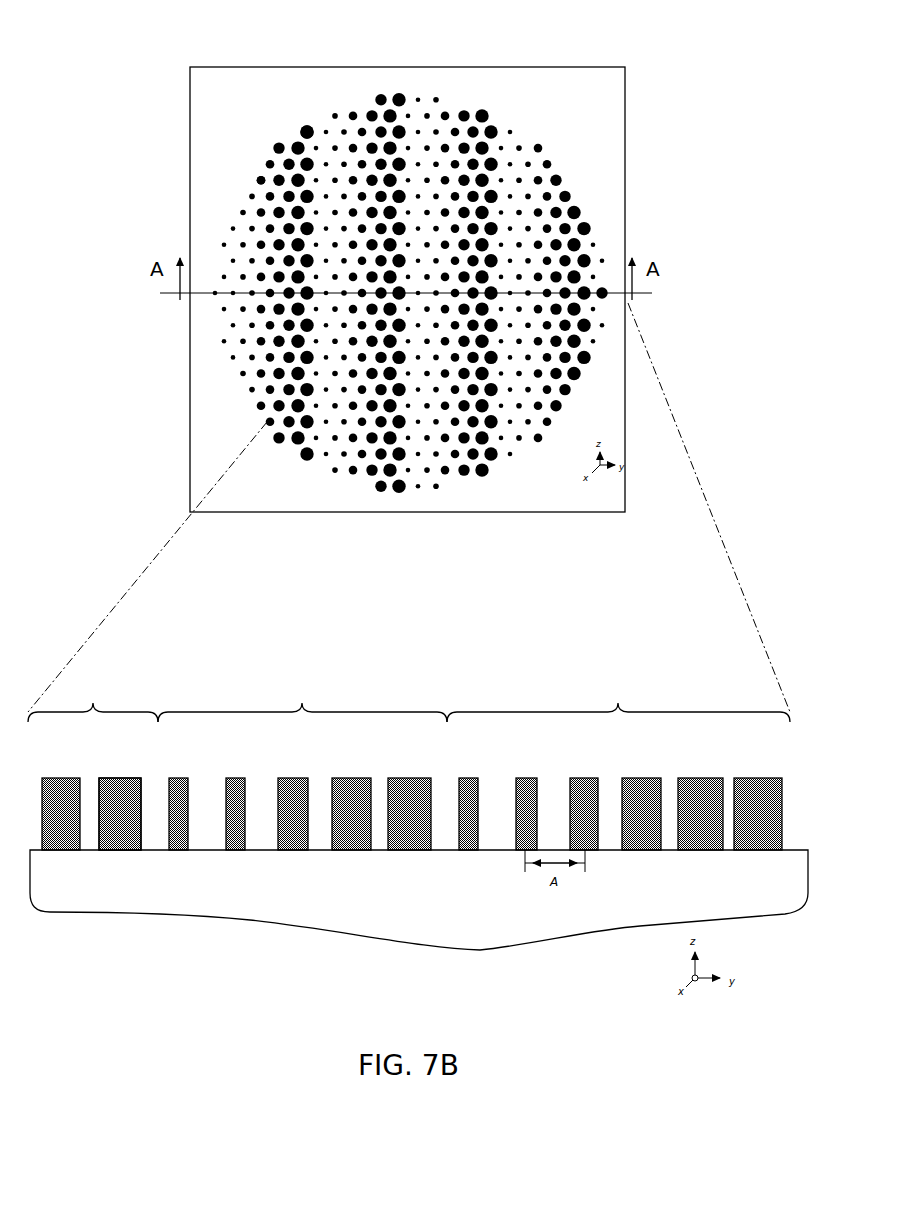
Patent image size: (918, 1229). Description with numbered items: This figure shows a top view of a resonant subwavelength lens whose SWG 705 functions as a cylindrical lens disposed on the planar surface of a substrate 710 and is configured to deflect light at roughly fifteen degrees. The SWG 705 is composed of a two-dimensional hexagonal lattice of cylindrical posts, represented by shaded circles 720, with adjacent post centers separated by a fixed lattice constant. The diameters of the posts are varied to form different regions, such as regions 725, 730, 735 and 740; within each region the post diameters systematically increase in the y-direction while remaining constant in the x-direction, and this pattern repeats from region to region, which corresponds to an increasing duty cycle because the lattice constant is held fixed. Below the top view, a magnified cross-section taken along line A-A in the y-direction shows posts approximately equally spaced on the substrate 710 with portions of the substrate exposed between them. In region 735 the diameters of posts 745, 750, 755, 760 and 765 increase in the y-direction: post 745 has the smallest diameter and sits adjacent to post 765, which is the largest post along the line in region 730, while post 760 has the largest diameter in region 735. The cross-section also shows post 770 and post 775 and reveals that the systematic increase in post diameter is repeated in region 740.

The SWG 705 is at (297, 122).
The substrate 710 is at (605, 113).
The shaded circles 720 is at (258, 405).
The region 725 is at (262, 170).
The region 730 is at (345, 112).
The region 735 is at (360, 438).
The region 740 is at (588, 228).
The post 745 is at (181, 776).
The post 750 is at (238, 776).
The post 755 is at (298, 776).
The post 760 is at (353, 776).
The post 765 is at (412, 776).
The pillar 770 is at (118, 776).
The pillar 775 is at (470, 776).